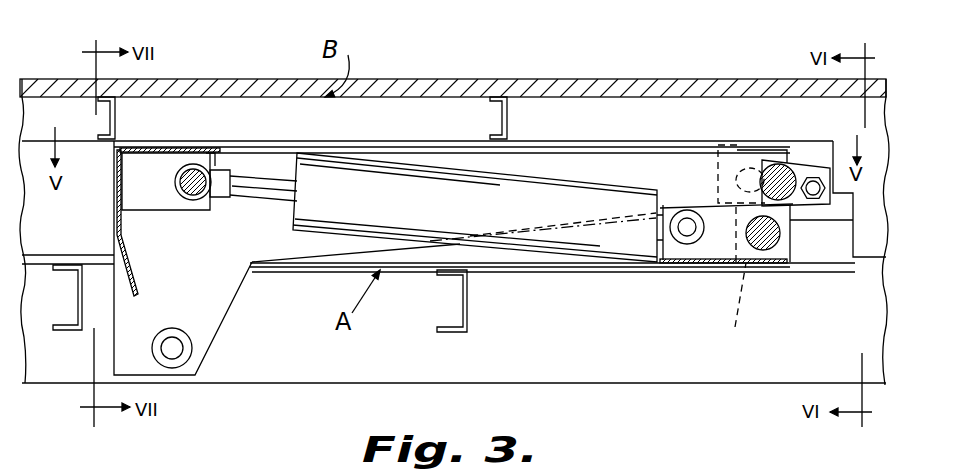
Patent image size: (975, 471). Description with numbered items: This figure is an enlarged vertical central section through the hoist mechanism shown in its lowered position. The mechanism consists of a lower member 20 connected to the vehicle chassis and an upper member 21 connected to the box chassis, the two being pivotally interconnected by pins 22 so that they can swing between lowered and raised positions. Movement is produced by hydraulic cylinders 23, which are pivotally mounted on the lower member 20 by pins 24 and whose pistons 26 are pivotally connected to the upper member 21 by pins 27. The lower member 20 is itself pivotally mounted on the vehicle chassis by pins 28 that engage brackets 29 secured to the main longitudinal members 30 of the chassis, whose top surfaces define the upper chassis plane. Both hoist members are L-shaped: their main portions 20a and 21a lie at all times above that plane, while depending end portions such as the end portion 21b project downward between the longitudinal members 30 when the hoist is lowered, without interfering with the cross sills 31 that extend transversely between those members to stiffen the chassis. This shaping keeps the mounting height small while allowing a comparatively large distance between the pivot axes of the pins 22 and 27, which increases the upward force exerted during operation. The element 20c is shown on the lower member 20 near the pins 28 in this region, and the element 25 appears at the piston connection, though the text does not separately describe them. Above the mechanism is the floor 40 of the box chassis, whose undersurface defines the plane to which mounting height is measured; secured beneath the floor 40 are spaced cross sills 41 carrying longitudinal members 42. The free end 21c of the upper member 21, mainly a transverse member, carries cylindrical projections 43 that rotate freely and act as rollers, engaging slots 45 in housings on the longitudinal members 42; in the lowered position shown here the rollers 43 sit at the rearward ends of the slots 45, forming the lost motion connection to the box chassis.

The lower member 20 is at (483, 253).
The main portion of lower member 20a is at (417, 253).
The plate pin 20c is at (787, 258).
The upper member 21 is at (463, 160).
The main portion of upper member 21a is at (582, 163).
The depending end portion of upper member 21b is at (212, 300).
The free end of upper member 21c is at (712, 165).
The pins 22 is at (172, 348).
The hydraulic cylinders 23 is at (567, 235).
The pins 24 is at (687, 232).
The clevis 25 is at (215, 173).
The pistons 26 is at (253, 188).
The pins 27 is at (182, 180).
The pins 28 is at (739, 282).
The brackets 29 is at (848, 262).
The main longitudinal members 30 is at (65, 363).
The cross sills 31 is at (77, 292).
The floor 40 is at (628, 80).
The cross sills 41 is at (116, 120).
The longitudinal members 42 is at (35, 152).
The cylindrical projections 43 is at (793, 150).
The slots 45 is at (752, 165).